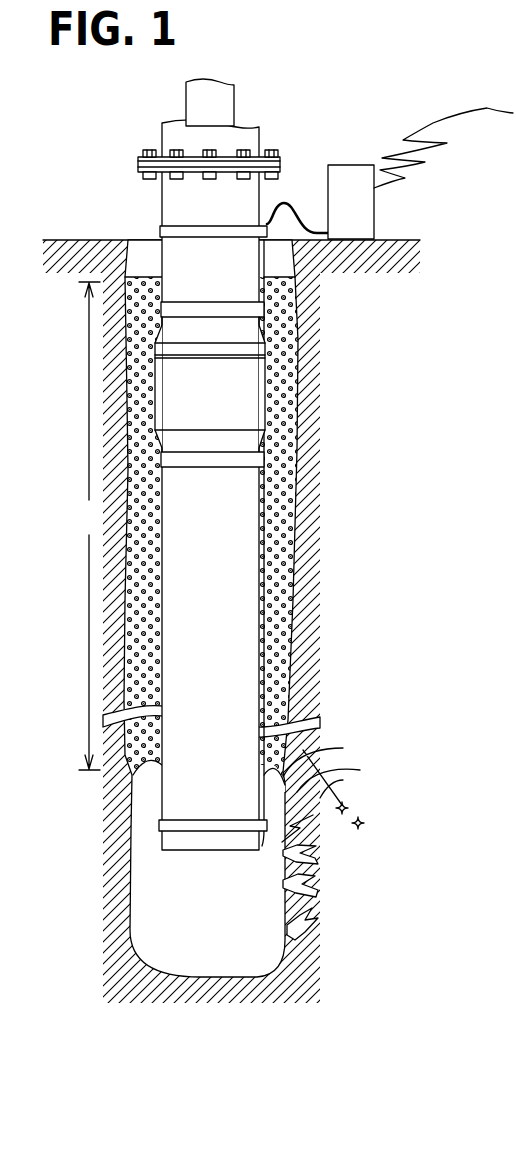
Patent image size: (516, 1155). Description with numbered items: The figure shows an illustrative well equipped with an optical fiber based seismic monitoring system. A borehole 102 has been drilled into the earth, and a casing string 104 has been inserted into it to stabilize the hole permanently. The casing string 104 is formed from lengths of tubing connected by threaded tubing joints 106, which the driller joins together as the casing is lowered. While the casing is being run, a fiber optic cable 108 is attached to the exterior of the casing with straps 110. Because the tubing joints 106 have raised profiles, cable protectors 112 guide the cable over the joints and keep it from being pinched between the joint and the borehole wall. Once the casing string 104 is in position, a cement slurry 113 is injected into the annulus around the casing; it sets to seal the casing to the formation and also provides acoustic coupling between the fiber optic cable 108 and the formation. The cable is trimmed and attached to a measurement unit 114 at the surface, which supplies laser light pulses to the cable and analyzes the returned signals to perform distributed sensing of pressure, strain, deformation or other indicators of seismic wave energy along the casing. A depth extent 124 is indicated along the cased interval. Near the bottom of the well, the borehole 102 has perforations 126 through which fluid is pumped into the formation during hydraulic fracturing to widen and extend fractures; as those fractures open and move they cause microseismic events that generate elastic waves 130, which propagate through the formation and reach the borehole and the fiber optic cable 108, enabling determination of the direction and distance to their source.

The borehole 102 is at (298, 337).
The casing string 104 is at (160, 205).
The tubing joints 106 is at (250, 408).
The fiber optic cable 108 is at (295, 202).
The straps 110 is at (192, 226).
The cable protectors 112 is at (267, 383).
The cement slurry 113 is at (282, 627).
The measurement unit 114 is at (376, 213).
The depth 124 is at (81, 526).
The perforations 126 is at (323, 815).
The elastic waves 130 is at (352, 773).